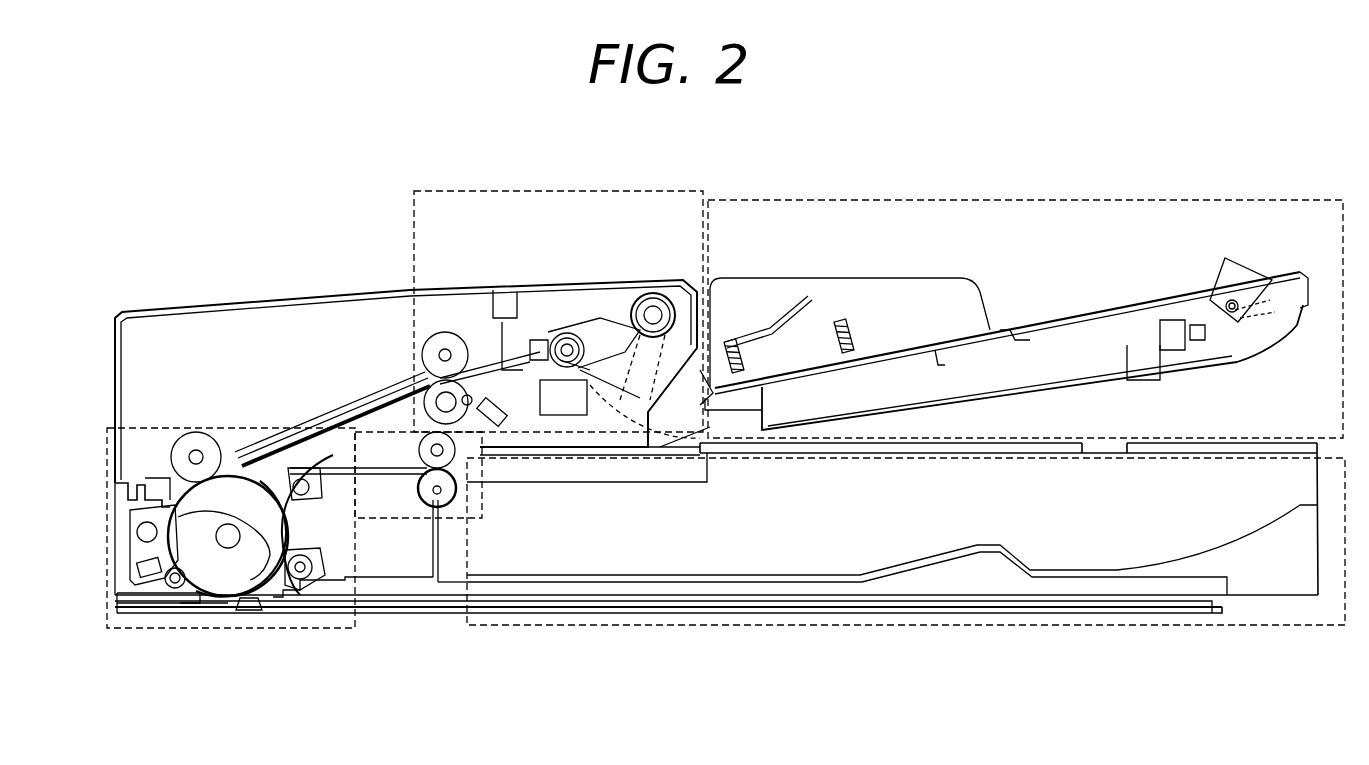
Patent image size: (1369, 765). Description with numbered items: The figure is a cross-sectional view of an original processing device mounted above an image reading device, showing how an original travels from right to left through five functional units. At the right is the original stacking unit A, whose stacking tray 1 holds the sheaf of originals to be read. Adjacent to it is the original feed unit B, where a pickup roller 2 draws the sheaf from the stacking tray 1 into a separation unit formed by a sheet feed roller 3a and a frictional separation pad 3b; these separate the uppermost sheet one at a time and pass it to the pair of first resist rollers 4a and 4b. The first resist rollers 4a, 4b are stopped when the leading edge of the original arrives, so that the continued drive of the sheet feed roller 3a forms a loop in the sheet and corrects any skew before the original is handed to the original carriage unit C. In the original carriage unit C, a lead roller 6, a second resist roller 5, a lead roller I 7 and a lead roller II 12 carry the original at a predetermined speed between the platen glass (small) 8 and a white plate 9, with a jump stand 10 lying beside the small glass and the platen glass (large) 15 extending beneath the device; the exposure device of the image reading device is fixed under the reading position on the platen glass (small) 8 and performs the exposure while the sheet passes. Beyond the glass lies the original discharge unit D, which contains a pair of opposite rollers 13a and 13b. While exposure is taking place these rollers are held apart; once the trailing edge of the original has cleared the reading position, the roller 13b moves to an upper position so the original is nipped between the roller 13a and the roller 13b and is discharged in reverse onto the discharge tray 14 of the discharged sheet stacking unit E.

The stacking tray 1 is at (922, 345).
The pickup roller 2 is at (660, 293).
The sheet feed roller 3a is at (572, 333).
The frictional separation pad 3b is at (593, 418).
The first resist roller 4a is at (452, 332).
The first resist roller 4b is at (420, 398).
The second resist roller 5 is at (205, 432).
The lead roller 6 is at (170, 485).
The lead roller I 7 is at (172, 590).
The platen glass (small) 8 is at (200, 603).
The white plate 9 is at (240, 602).
The jump stand 10 is at (255, 603).
The lead roller II 12 is at (305, 582).
The opposite roller 13a is at (458, 458).
The opposite roller 13b is at (422, 497).
The discharge tray 14 is at (562, 582).
The platen glass (large) 15 is at (700, 615).
The original stacking unit A is at (1290, 200).
The original feed unit B is at (437, 191).
The original carriage unit C is at (107, 443).
The original discharge unit D is at (421, 518).
The discharged sheet stacking unit E is at (1318, 628).